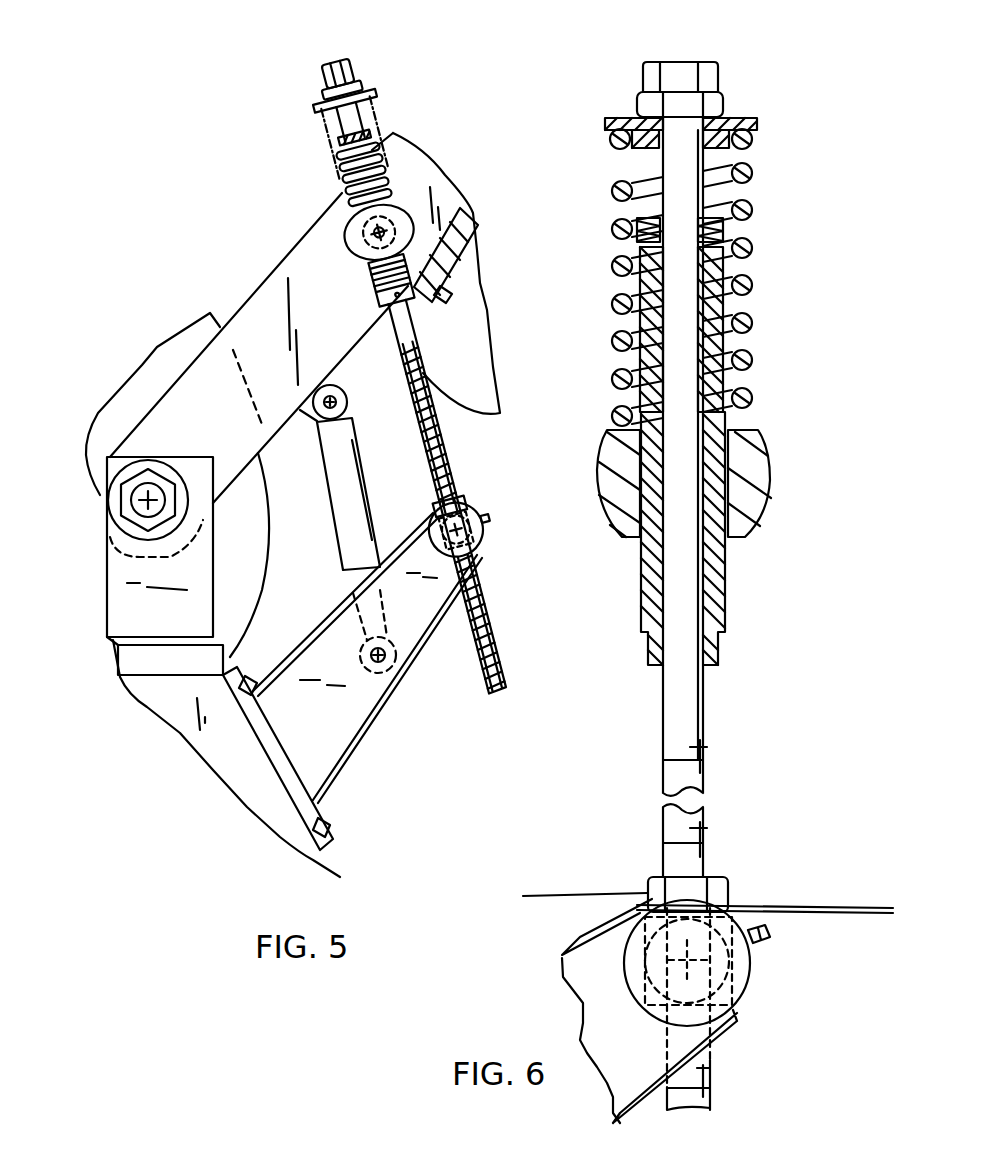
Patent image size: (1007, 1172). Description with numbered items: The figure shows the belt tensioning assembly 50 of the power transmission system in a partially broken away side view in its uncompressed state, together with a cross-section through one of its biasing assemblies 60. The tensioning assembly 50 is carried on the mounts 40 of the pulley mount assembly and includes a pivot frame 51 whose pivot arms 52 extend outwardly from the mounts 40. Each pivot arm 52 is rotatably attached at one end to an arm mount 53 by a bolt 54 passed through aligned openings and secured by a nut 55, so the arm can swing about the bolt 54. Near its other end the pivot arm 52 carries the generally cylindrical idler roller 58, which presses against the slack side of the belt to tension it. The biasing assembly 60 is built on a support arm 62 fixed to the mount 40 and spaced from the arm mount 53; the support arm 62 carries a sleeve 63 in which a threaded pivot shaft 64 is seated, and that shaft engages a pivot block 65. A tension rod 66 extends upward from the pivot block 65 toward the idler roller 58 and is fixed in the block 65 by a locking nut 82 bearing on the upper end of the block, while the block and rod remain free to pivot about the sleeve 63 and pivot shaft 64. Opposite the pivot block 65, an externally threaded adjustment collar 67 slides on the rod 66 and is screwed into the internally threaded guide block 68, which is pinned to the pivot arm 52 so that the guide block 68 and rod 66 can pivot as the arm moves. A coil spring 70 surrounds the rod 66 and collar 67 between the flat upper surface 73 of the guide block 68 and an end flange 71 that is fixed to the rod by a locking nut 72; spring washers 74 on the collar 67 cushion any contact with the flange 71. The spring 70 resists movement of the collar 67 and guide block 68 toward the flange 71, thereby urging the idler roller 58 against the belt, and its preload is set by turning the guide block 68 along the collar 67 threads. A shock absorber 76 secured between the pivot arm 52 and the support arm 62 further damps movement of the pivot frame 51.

In FIG. 5, the mounts 40 is at (310, 853).
In FIG. 5, the tensioning assembly 50 is at (232, 268).
In FIG. 5, the pivot frame 51 is at (277, 260).
In FIG. 5, the pivot arms 52 is at (200, 387).
In FIG. 5, the arm mounts 53 is at (122, 600).
In FIG. 5, the bolts 54 is at (130, 517).
In FIG. 5, the nuts 55 is at (127, 484).
In FIG. 5, the idler roller 58 is at (470, 335).
In FIG. 5, the biasing assemblies 60 is at (489, 462).
In FIG. 6, the biasing assemblies 60 is at (587, 819).
In FIG. 5, the support arm 62 is at (363, 737).
In FIG. 6, the support arm 62 is at (580, 937).
In FIG. 5, the sleeve 63 is at (486, 527).
In FIG. 6, the sleeve 63 is at (748, 910).
In FIG. 5, the threaded pivot shaft 64 is at (480, 548).
In FIG. 6, the threaded pivot shaft 64 is at (733, 970).
In FIG. 5, the pivot block 65 is at (410, 220).
In FIG. 5, the tension rod 66 is at (422, 452).
In FIG. 6, the tension rod 66 is at (707, 750).
In FIG. 5, the adjustment collar 67 is at (478, 230).
In FIG. 6, the adjustment collar 67 is at (723, 652).
In FIG. 6, the guide block 68 is at (770, 470).
In FIG. 5, the spring 70 is at (362, 107).
In FIG. 6, the spring 70 is at (752, 247).
In FIG. 5, the end flange 71 is at (312, 100).
In FIG. 6, the end flange 71 is at (605, 122).
In FIG. 5, the locking nut 72 is at (343, 64).
In FIG. 6, the locking nut 72 is at (645, 72).
In FIG. 5, the flat upper surface 73 is at (400, 200).
In FIG. 6, the flat upper surface 73 is at (733, 427).
In FIG. 5, the spring washers 74 is at (330, 140).
In FIG. 6, the spring washers 74 is at (712, 218).
In FIG. 5, the shock absorbers 76 is at (330, 503).
In FIG. 5, the locking nut 82 is at (463, 517).
In FIG. 6, the locking nut 82 is at (727, 880).